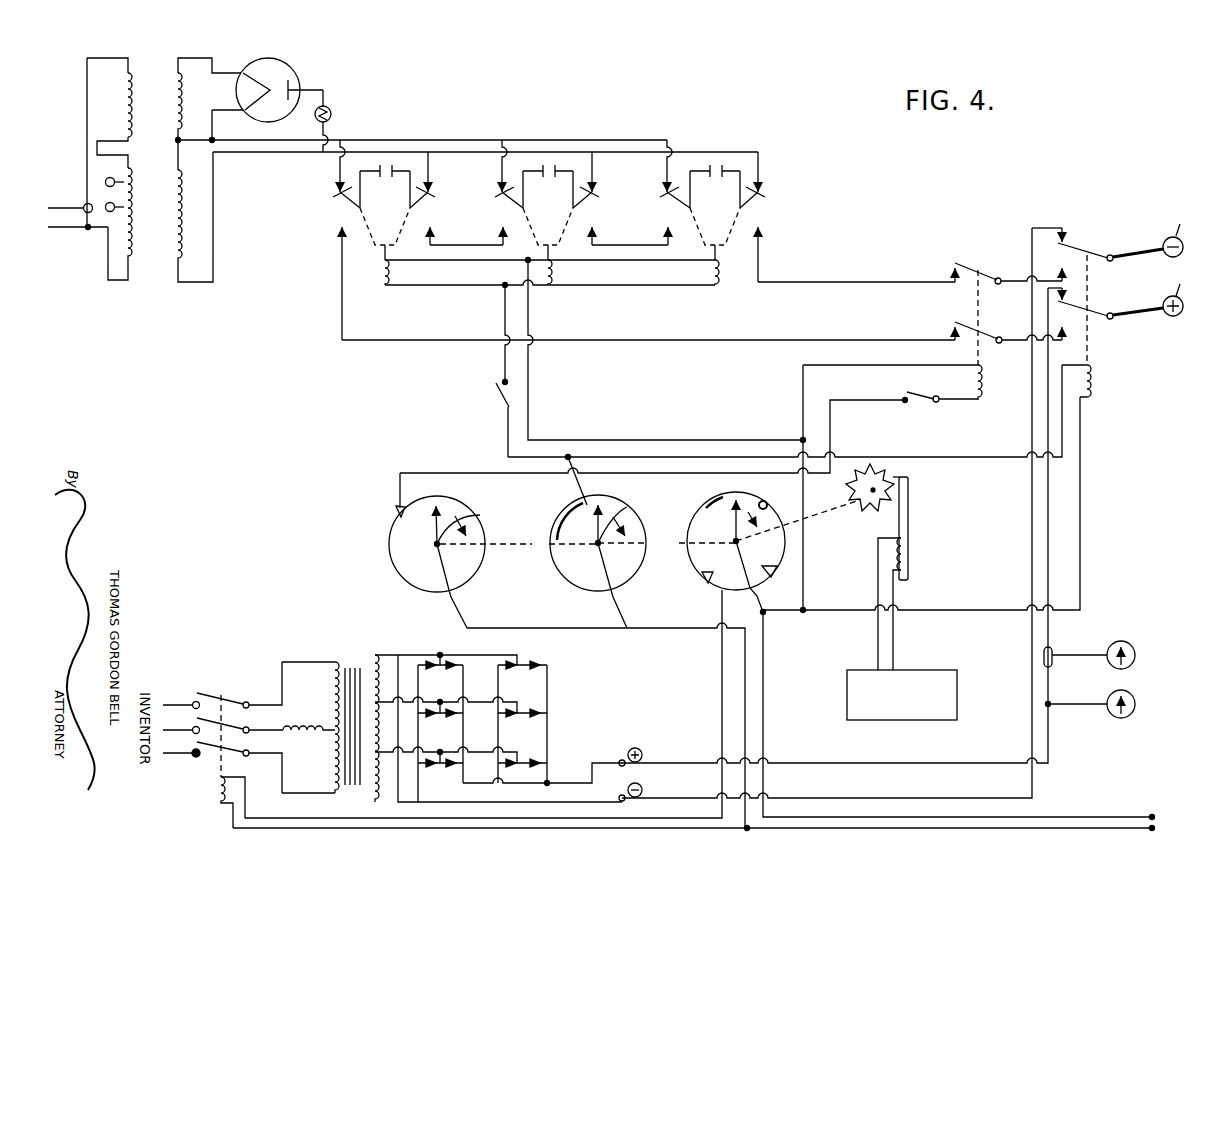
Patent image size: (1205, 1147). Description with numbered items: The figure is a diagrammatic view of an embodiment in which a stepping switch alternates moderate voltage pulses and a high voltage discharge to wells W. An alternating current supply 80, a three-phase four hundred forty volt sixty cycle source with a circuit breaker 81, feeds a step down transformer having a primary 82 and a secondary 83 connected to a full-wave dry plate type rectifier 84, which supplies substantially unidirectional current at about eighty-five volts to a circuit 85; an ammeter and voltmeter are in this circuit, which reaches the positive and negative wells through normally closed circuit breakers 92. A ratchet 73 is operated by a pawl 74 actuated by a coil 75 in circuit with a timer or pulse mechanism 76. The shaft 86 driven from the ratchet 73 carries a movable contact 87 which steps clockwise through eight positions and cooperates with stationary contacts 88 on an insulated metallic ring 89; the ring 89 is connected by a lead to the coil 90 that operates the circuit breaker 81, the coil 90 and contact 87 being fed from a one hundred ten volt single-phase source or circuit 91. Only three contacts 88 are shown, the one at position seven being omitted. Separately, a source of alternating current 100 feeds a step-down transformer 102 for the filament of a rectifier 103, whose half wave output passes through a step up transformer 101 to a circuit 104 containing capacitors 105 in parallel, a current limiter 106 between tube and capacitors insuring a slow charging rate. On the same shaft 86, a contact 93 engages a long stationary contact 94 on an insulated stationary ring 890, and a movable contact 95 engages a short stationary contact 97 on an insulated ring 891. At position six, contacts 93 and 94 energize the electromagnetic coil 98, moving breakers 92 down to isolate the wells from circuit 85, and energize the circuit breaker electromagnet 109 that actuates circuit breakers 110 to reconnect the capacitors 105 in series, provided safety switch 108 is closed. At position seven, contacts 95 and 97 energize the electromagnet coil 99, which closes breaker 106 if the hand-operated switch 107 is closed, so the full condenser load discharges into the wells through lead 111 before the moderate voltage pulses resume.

The ratchet 73 is at (868, 502).
The pawl 74 is at (909, 509).
The coil 75 is at (909, 560).
The timer or pulse mechanism 76 is at (913, 668).
The alternating current supply 80 is at (176, 710).
The circuit breaker 81 is at (230, 700).
The primary 82 is at (333, 660).
The secondary 83 is at (380, 654).
The full-wave dry plate type rectifier 84 is at (488, 665).
The circuit 85 is at (645, 780).
The shaft 86 is at (502, 546).
The movable contact 87 is at (711, 492).
The stationary contacts 88 is at (763, 500).
The insulated metallic ring 89 is at (693, 520).
The coil 90 is at (216, 790).
The circuit 91 is at (1128, 817).
The circuit breakers 92 is at (1106, 314).
The contact 93 is at (620, 515).
The long stationary contact 94 is at (557, 532).
The movable contact 95 is at (469, 524).
The short stationary contact 97 is at (396, 520).
The electromagnetic coil 98 is at (1094, 392).
The electromagnet coil 99 is at (984, 393).
The source of alternating current 100 is at (58, 214).
The step up transformer 101 is at (125, 243).
The step-down transformer 102 is at (125, 100).
The rectifier 103 is at (289, 70).
The circuit 104 is at (455, 152).
The capacitors 105 is at (388, 162).
The current limiter 106 is at (330, 110).
The hand-operated switch 107 is at (918, 398).
The safety switch 108 is at (503, 394).
The circuit breaker electromagnet 109 is at (392, 276).
The circuit breakers 110 is at (340, 202).
The lead 111 is at (372, 244).
The insulated stationary ring 890 is at (596, 555).
The insulated ring 891 is at (398, 570).